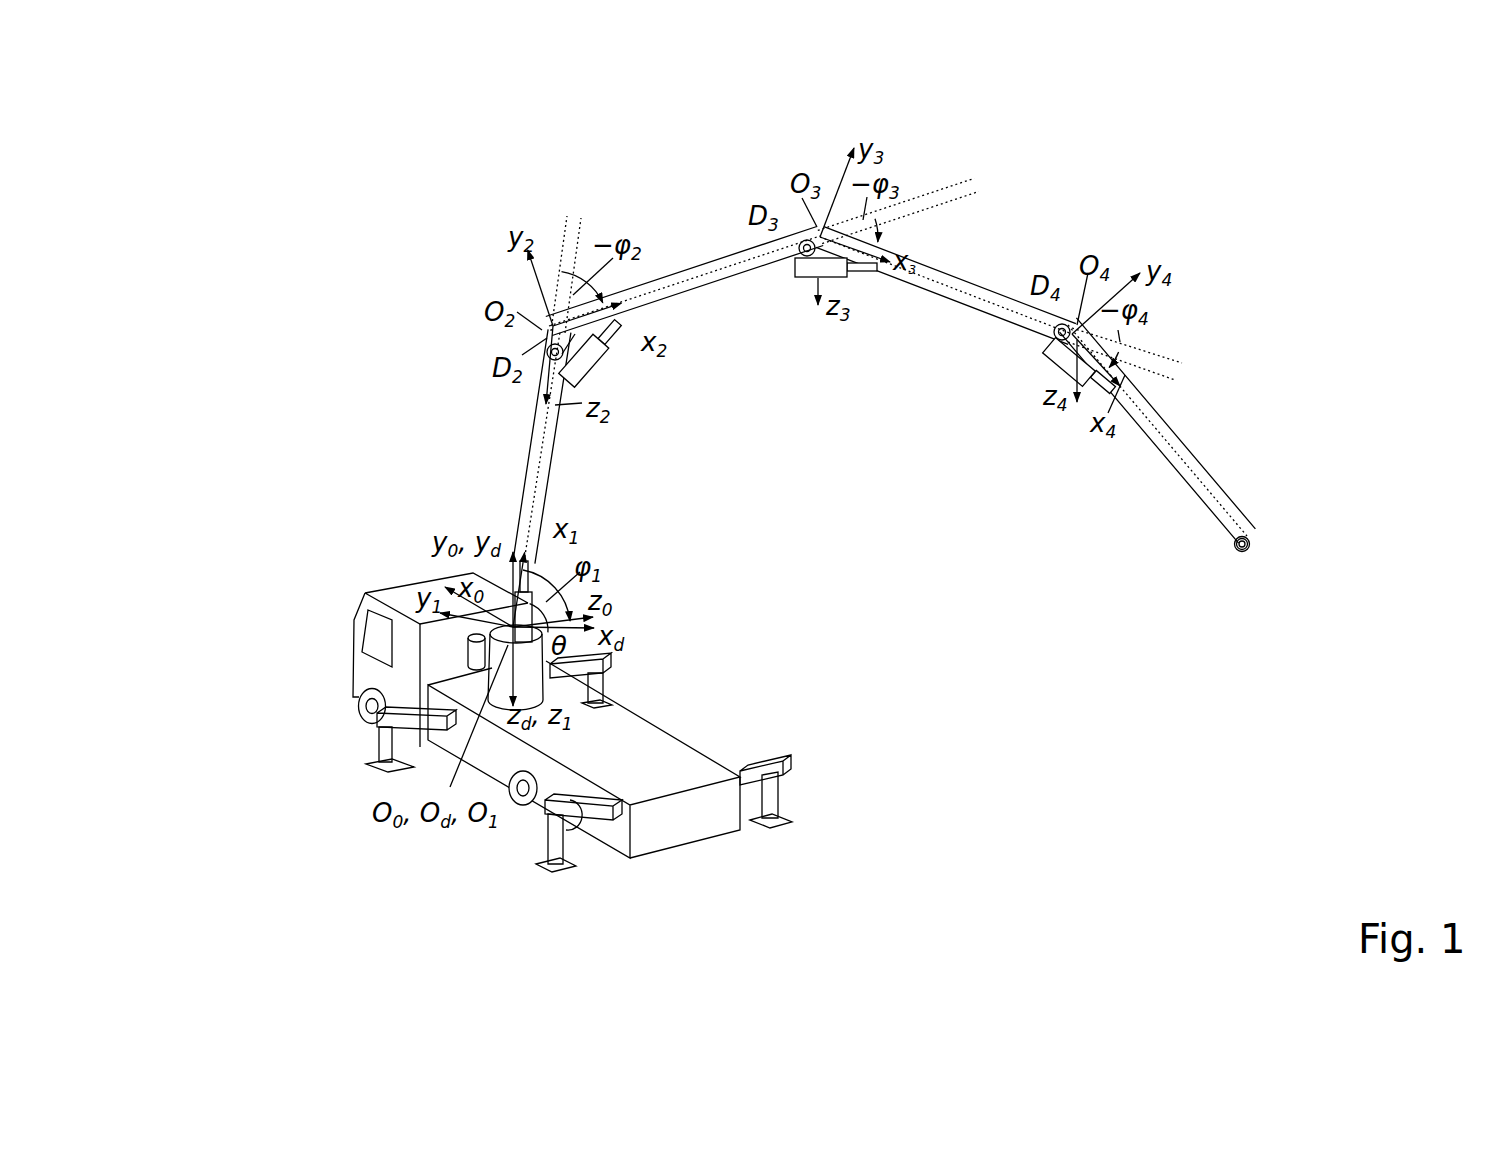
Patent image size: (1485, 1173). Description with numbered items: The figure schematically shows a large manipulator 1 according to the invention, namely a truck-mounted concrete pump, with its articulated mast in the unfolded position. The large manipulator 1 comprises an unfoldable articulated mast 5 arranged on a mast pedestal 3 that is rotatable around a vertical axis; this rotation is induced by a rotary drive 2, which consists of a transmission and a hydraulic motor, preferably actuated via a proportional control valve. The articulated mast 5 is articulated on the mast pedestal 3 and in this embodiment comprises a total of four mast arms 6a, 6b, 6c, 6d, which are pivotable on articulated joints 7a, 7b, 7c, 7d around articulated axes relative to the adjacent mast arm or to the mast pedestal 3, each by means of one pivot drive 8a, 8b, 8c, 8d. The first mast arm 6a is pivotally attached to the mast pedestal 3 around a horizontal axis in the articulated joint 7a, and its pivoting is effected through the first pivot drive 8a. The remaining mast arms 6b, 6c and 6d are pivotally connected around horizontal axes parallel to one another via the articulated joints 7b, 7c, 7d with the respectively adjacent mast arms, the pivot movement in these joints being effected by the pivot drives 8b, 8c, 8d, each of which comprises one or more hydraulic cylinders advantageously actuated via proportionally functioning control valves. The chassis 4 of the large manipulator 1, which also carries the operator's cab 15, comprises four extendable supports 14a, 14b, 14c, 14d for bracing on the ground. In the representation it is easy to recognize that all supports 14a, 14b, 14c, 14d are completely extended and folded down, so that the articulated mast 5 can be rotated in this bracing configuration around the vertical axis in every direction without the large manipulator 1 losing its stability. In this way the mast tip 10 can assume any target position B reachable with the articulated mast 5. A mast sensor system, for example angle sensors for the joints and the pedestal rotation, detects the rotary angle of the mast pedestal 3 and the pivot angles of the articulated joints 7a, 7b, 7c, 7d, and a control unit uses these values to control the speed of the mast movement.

The large manipulator 1 is at (323, 358).
The rotary drive 2 is at (469, 662).
The mast pedestal 3 is at (508, 646).
The chassis 4 is at (709, 806).
The articulated mast 5 is at (386, 212).
The first mast arm 6a is at (531, 470).
The second mast arm 6b is at (706, 269).
The third mast arm 6c is at (963, 281).
The fourth mast arm 6d is at (1160, 428).
The first articulated joint 7a is at (502, 627).
The second articulated joint 7b is at (549, 343).
The third articulated joint 7c is at (802, 240).
The fourth articulated joint 7d is at (1064, 322).
The first pivot drive 8a is at (526, 630).
The second pivot drive 8b is at (598, 358).
The third pivot drive 8c is at (856, 270).
The fourth pivot drive 8d is at (1058, 358).
The mast tip 10 is at (1245, 556).
The support 14a is at (550, 838).
The support 14b is at (378, 733).
The support 14c is at (603, 675).
The support 14d is at (780, 781).
The operator's cab 15 is at (398, 591).
The target position B is at (1246, 537).